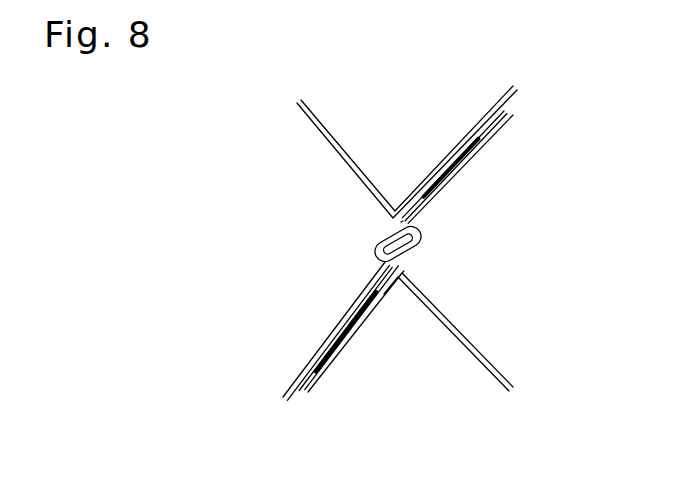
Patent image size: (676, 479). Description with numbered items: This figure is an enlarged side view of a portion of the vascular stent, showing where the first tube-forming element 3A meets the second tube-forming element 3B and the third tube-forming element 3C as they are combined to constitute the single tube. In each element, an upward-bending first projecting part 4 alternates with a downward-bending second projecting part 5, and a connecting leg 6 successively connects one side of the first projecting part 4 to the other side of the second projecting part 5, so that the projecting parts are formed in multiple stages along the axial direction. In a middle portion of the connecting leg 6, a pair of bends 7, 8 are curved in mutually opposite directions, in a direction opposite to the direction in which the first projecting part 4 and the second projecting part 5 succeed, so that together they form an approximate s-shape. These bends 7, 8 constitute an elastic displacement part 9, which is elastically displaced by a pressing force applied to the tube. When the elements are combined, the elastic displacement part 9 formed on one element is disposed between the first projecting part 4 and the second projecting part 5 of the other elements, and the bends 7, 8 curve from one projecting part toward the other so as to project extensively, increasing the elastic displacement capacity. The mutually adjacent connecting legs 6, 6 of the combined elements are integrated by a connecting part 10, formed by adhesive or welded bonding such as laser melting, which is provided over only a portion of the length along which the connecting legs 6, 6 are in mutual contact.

The first tube-forming element 3A is at (449, 314).
The second tube-forming element 3B is at (336, 150).
The third tube-forming element 3C is at (304, 367).
The first projecting part 4 is at (406, 268).
The second projecting part 5 is at (396, 222).
The connecting leg 6 is at (462, 147).
The bend 7 is at (418, 233).
The bend 8 is at (383, 258).
The elastic displacement part 9 is at (432, 245).
The connecting part 10 is at (487, 130).